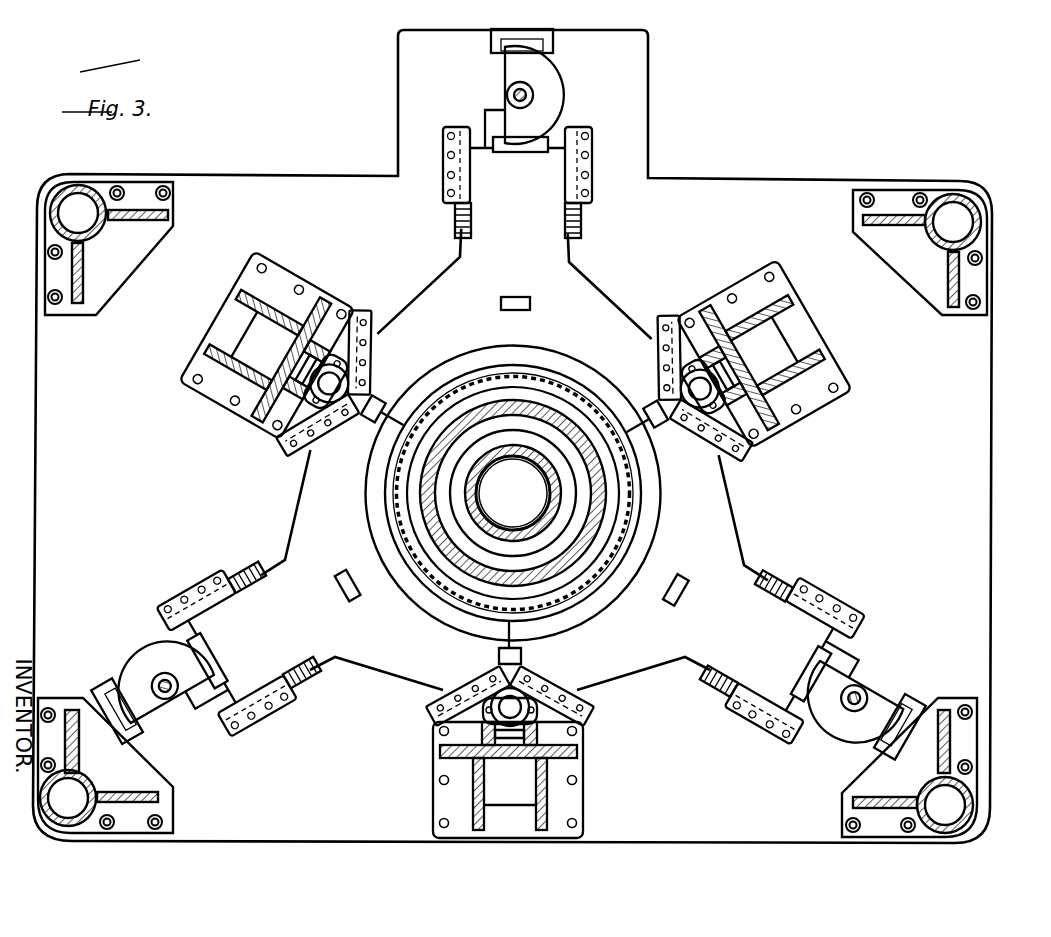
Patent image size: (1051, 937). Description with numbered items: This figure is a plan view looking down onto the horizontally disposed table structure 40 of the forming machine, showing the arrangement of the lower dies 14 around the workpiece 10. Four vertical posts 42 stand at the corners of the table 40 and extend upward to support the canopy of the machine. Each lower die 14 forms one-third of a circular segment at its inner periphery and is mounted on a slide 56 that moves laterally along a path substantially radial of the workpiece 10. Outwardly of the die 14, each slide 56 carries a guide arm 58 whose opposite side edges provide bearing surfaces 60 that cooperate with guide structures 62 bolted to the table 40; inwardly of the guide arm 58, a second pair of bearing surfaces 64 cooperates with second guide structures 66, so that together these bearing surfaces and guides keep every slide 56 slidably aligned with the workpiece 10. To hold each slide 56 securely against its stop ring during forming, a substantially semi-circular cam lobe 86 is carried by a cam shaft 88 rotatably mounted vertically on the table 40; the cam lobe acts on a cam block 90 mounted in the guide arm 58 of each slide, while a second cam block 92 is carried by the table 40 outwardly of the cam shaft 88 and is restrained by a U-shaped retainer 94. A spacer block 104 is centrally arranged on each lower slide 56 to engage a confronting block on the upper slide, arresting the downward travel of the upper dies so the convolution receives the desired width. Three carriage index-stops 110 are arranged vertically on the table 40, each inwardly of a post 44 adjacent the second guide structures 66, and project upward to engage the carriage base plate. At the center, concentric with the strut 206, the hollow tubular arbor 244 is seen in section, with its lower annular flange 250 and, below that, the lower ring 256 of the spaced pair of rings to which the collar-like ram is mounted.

The workpiece 10 is at (445, 385).
The lower die 14 is at (425, 605).
The table structure 40 is at (1004, 452).
The vertical post 42 is at (40, 212).
The post 44 is at (585, 778).
The slide 56 is at (641, 675).
The guide arm 58 is at (462, 248).
The bearing surfaces 60 is at (448, 206).
The guide structures 62 is at (742, 736).
The second pair of bearing surfaces 64 is at (498, 656).
The second guide structures 66 is at (438, 705).
The cam lobe 86 is at (560, 80).
The cam shaft 88 is at (505, 95).
The cam block 90 is at (545, 138).
The second cam block 92 is at (500, 50).
The U-shaped retainer 94 is at (555, 45).
The spacer block 104 is at (470, 283).
The carriage index-stop 110 is at (478, 712).
The strut 206 is at (513, 452).
The tubular arbor 244 is at (557, 417).
The annular flange 250 is at (585, 487).
The ring 256 is at (560, 517).